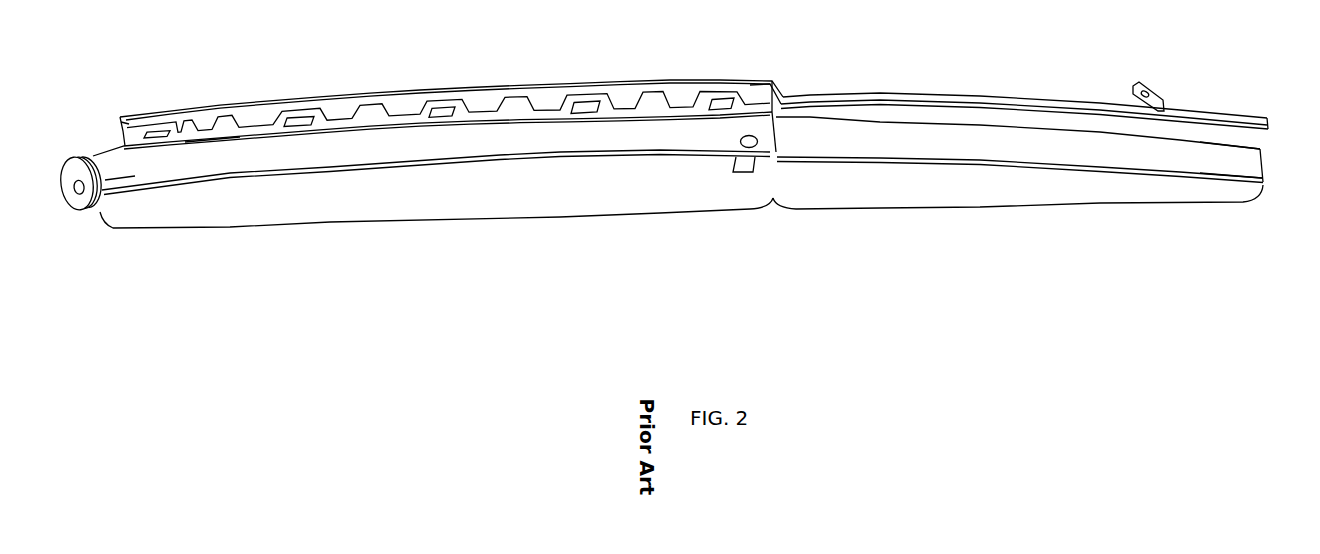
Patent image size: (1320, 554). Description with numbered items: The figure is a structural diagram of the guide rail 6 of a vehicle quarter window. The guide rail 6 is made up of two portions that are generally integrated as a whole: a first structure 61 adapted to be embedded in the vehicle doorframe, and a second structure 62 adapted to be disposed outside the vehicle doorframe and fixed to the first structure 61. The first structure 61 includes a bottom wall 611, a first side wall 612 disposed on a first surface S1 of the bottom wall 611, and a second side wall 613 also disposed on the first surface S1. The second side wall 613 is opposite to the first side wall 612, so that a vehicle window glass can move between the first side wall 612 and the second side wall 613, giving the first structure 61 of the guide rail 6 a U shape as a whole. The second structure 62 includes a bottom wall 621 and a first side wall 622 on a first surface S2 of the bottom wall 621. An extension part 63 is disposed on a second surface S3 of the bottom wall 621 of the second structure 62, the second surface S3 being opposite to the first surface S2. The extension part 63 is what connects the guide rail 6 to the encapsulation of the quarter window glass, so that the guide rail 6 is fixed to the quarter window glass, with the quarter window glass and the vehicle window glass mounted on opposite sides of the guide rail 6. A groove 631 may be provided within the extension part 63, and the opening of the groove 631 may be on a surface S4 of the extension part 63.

The guide rail 6 is at (792, 41).
The first structure 61 is at (987, 216).
The bottom wall 611 is at (1243, 139).
The first side wall 612 is at (1252, 158).
The second side wall 613 is at (1255, 120).
The second structure 62 is at (508, 227).
The bottom wall 621 is at (207, 148).
The first side wall 622 is at (121, 181).
The extension part 63 is at (126, 116).
The groove 631 is at (164, 109).
The first surface S1 is at (804, 122).
The first surface S2 is at (142, 151).
The second surface S3 is at (755, 85).
The surface S4 is at (119, 120).